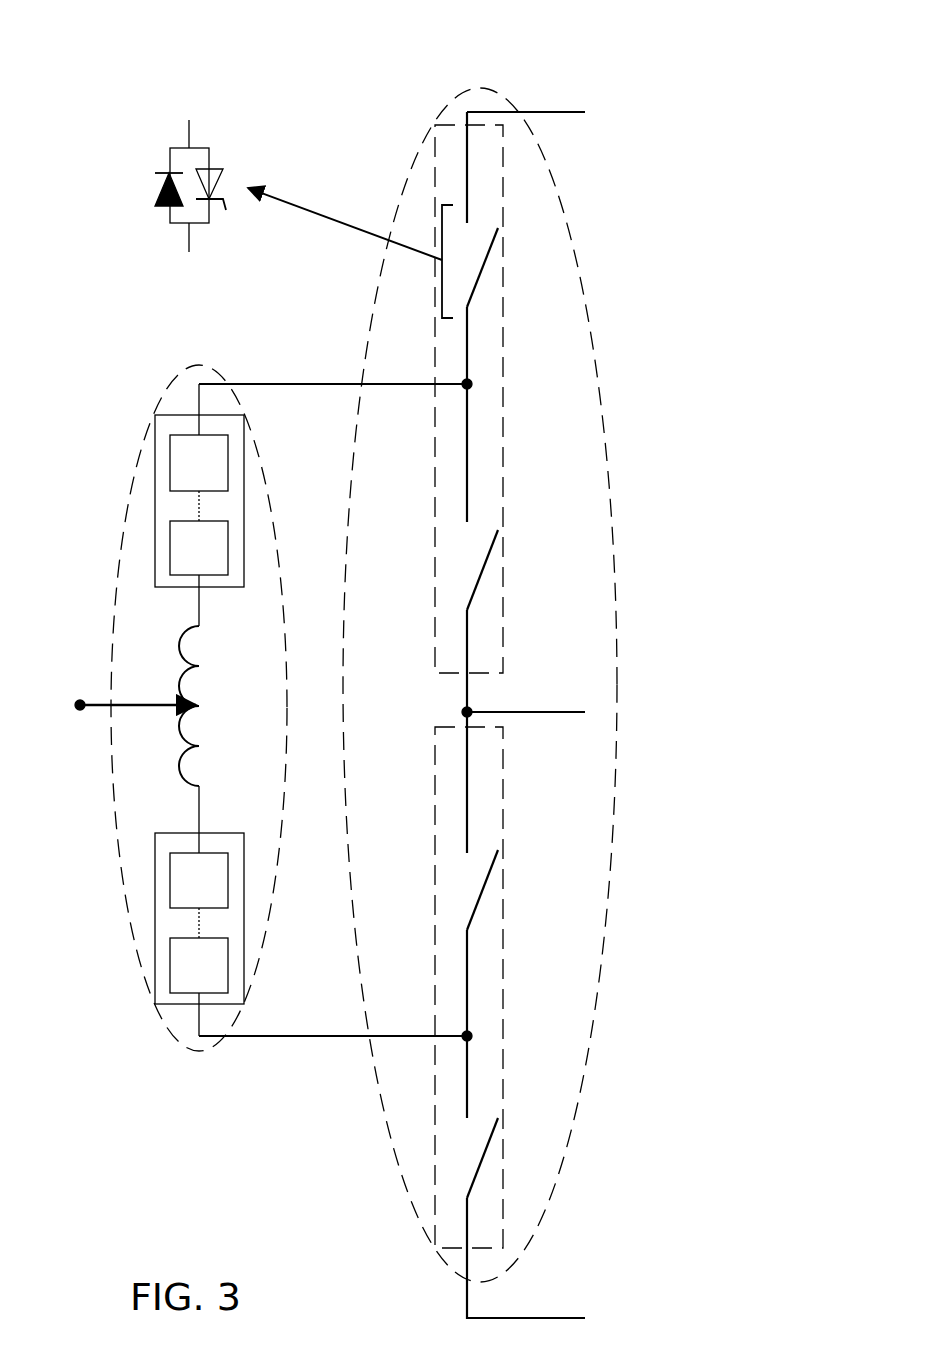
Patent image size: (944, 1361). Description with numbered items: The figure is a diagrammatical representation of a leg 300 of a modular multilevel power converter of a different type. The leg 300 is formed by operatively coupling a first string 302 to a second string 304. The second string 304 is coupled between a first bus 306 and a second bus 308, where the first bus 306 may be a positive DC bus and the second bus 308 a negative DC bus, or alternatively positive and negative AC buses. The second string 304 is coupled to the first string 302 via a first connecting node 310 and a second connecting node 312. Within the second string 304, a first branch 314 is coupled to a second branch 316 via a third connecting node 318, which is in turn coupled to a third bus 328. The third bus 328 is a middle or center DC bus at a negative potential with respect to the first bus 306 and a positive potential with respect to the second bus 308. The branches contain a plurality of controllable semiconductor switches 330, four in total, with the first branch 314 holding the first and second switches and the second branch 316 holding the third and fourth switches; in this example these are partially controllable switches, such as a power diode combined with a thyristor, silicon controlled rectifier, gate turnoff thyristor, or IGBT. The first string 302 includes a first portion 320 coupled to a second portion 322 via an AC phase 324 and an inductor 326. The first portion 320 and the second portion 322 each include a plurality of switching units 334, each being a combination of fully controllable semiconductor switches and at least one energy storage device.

The leg 300 is at (152, 42).
The first string 302 is at (124, 520).
The second string 304 is at (586, 288).
The first bus 306 is at (572, 112).
The second bus 308 is at (552, 1318).
The first connecting node 310 is at (470, 385).
The second connecting node 312 is at (470, 1036).
The first branch 314 is at (503, 155).
The second branch 316 is at (503, 1200).
The third connecting node 318 is at (470, 716).
The first portion 320 is at (170, 415).
The second portion 322 is at (155, 887).
The AC phase 324 is at (135, 704).
The inductor 326 is at (178, 765).
The third bus 328 is at (570, 712).
The controllable semiconductor switches 330 is at (217, 120).
The switching unit 334 is at (180, 993).